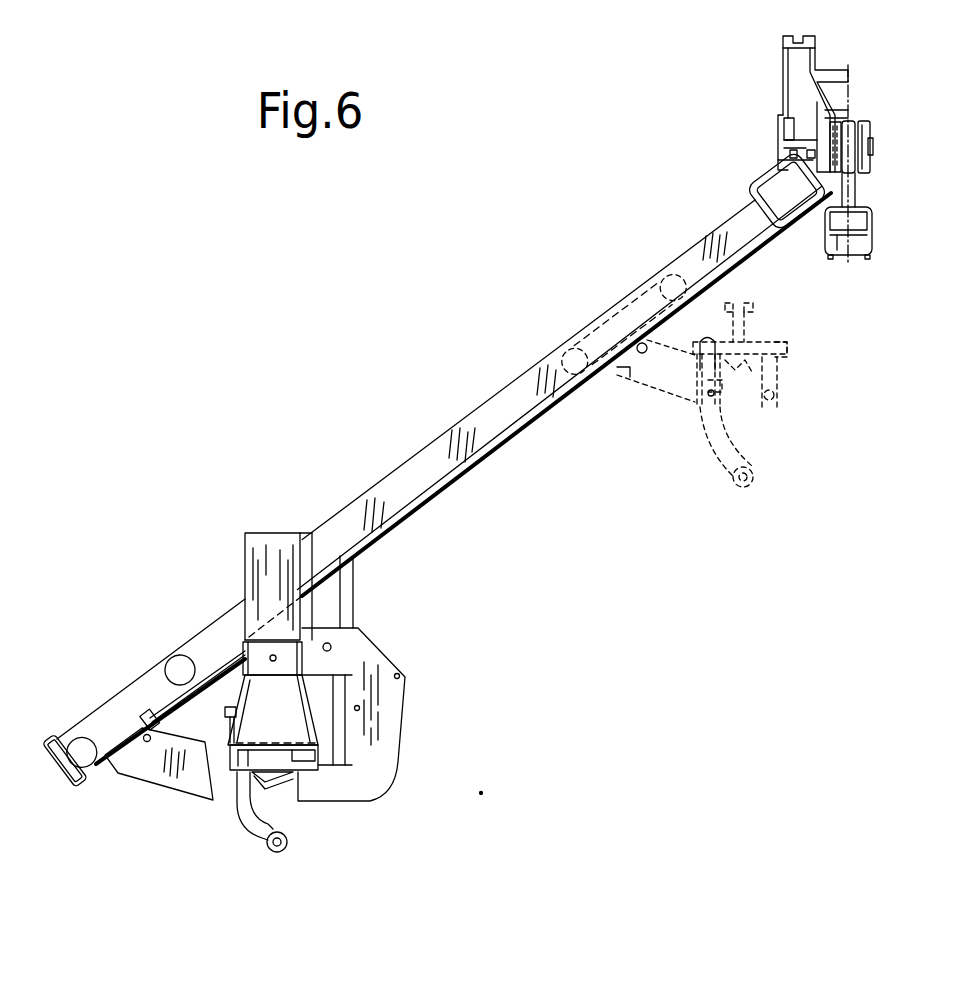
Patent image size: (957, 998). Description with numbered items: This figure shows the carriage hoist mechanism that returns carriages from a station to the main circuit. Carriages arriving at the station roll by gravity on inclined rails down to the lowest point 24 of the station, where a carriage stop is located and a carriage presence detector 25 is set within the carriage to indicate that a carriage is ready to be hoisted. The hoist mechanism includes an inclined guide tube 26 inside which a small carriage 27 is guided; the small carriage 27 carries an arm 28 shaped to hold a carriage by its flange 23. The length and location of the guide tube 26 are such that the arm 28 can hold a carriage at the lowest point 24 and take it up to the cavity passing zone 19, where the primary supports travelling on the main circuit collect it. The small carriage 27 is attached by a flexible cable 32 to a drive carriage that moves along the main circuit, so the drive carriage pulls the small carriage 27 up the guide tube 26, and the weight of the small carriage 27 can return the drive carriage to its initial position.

The cavity passing zone 19 is at (839, 229).
The flange 23 is at (229, 733).
The lowest point of the station 24 is at (267, 731).
The carriage presence detector 25 is at (318, 755).
The guide tube 26 is at (410, 507).
The small carriage 27 is at (149, 664).
The arm 28 is at (152, 783).
The flexible cable 32 is at (512, 453).